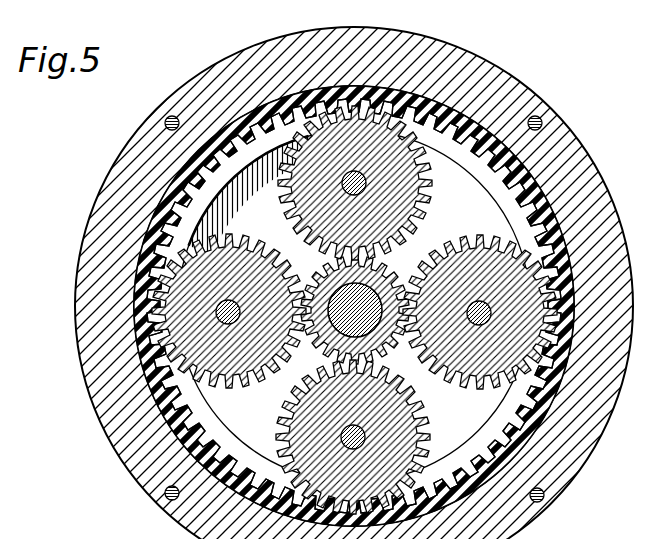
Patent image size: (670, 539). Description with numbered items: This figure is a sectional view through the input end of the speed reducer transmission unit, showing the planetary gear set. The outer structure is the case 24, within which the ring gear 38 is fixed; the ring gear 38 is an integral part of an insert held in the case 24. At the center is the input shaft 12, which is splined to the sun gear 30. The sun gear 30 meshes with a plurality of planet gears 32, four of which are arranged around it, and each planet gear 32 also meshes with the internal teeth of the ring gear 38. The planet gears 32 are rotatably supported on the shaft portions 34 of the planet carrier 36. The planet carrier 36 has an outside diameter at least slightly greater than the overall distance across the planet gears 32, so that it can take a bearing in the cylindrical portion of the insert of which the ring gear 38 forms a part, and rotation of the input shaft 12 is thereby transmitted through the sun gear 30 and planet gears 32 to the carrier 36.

The input shaft 12 is at (361, 320).
The case 24 is at (128, 147).
The sun gear 30 is at (298, 323).
The planet gears 32 is at (310, 198).
The shaft portions 34 is at (354, 170).
The planet carrier 36 is at (448, 223).
The ring gear 38 is at (508, 431).